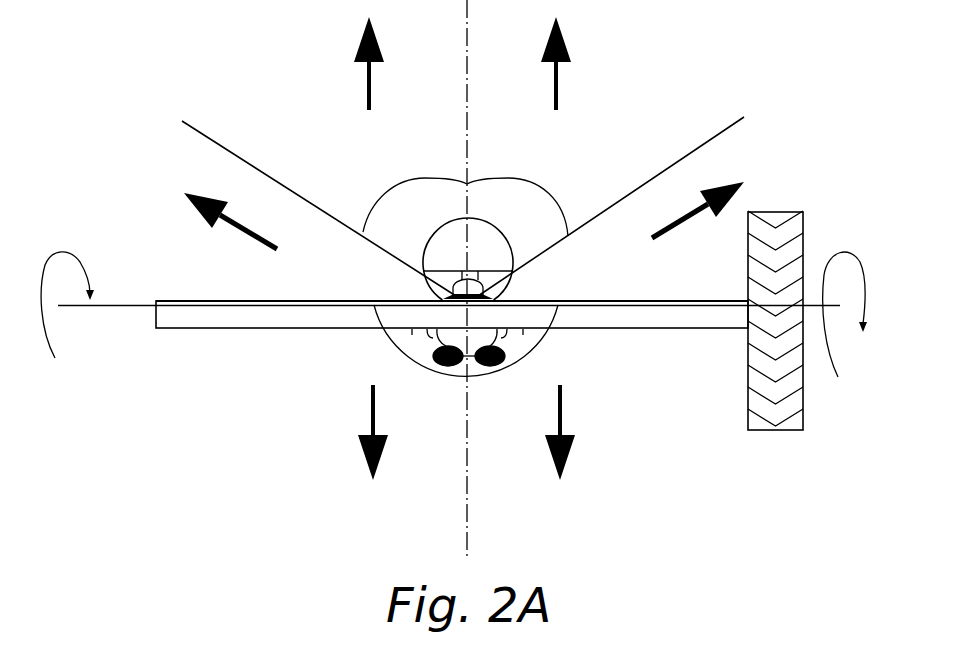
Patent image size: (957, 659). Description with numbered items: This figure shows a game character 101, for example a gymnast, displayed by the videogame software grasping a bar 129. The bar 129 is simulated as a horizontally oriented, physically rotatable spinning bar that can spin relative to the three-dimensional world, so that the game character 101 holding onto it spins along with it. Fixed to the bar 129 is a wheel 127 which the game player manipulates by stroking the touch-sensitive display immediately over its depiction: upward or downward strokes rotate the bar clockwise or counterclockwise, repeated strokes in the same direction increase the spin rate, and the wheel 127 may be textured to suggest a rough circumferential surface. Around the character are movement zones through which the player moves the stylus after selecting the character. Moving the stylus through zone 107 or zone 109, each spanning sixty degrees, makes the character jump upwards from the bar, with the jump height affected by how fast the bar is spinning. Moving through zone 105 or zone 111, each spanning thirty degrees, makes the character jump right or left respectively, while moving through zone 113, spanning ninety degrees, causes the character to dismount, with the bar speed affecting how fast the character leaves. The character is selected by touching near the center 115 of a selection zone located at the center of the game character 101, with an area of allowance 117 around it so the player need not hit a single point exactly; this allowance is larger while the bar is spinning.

The game character 101 is at (503, 241).
The movement zone 105 is at (727, 279).
The movement zone 107 is at (669, 71).
The movement zone 109 is at (297, 71).
The movement zone 111 is at (197, 273).
The movement zone 113 is at (300, 428).
The center of the selection zone 115 is at (673, 463).
The area of allowance 117 is at (547, 343).
The wheel 127 is at (778, 215).
The bar 129 is at (668, 312).